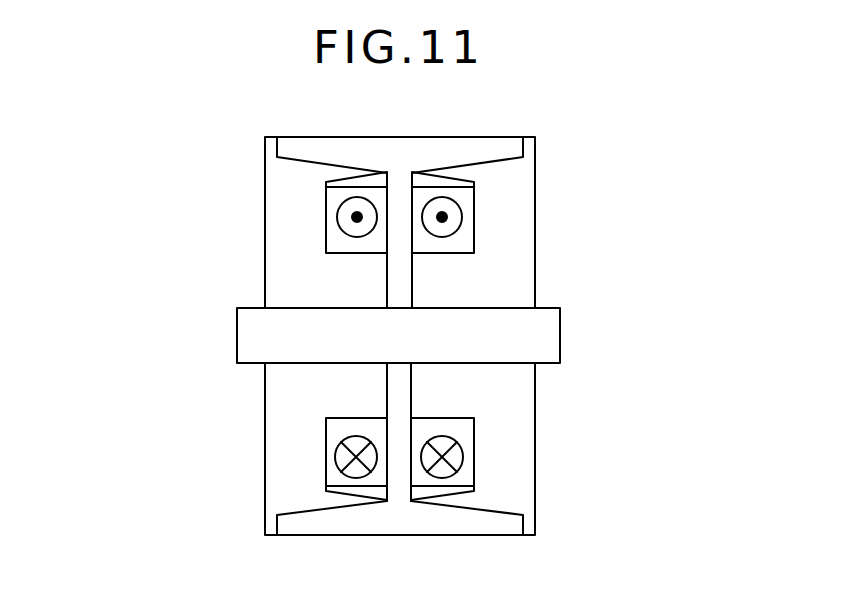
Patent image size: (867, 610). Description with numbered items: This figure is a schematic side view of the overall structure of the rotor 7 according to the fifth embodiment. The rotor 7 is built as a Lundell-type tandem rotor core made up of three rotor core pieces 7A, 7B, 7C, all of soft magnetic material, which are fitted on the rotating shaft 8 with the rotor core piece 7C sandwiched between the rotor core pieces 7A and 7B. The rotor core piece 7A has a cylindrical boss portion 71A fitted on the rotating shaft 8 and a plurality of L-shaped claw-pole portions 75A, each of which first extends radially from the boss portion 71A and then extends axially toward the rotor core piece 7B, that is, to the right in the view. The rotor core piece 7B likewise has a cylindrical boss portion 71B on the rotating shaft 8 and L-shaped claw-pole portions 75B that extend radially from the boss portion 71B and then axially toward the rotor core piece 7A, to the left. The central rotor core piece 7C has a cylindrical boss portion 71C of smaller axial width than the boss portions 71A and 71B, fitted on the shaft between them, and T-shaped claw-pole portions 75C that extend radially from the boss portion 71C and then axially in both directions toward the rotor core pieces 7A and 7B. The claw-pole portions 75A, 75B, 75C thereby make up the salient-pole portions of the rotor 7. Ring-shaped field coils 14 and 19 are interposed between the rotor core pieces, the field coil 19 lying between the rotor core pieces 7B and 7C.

The rotor 7 is at (228, 507).
The rotor core piece 7A is at (256, 182).
The rotor core piece 7B is at (547, 249).
The rotor core piece 7C is at (422, 273).
The rotating shaft 8 is at (560, 335).
The field coil 14 is at (357, 214).
The field coil 19 is at (444, 215).
The boss portion 71A is at (288, 268).
The boss portion 71B is at (450, 297).
The boss portion 71C is at (400, 292).
The claw-pole portion 75A is at (283, 222).
The claw-pole portion 75B is at (517, 207).
The claw-pole portion 75C is at (438, 142).